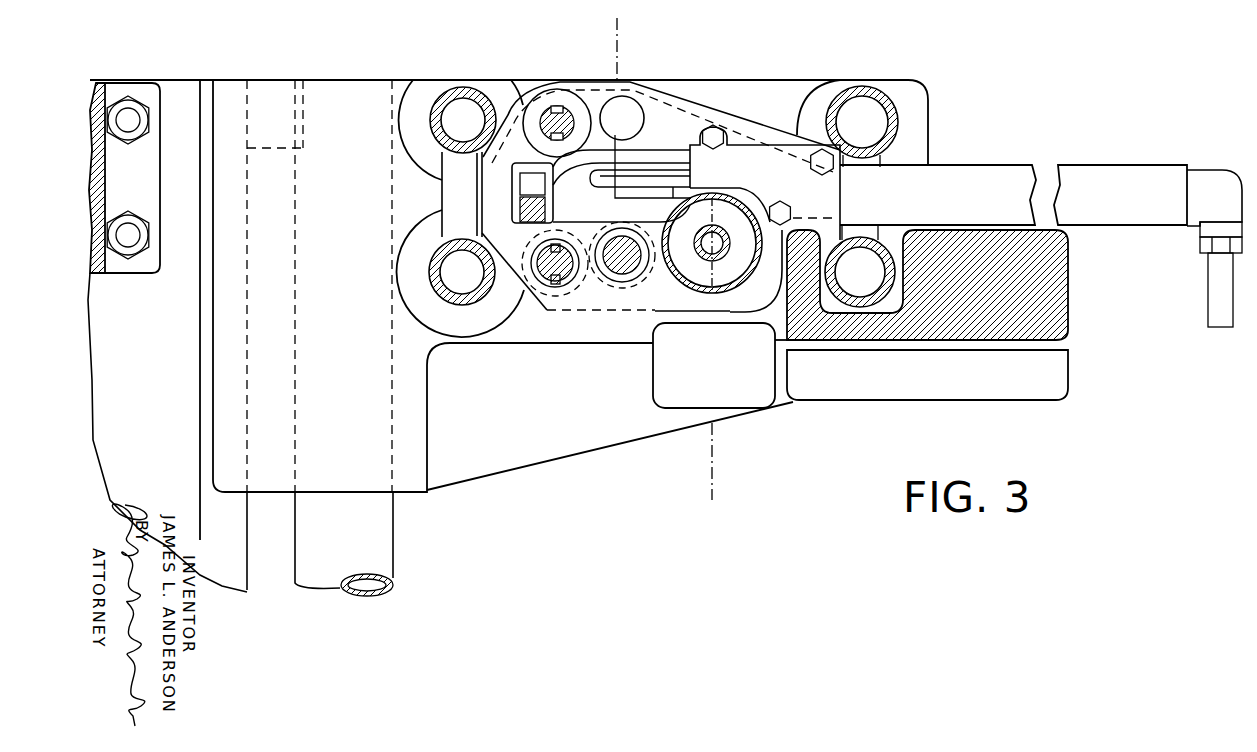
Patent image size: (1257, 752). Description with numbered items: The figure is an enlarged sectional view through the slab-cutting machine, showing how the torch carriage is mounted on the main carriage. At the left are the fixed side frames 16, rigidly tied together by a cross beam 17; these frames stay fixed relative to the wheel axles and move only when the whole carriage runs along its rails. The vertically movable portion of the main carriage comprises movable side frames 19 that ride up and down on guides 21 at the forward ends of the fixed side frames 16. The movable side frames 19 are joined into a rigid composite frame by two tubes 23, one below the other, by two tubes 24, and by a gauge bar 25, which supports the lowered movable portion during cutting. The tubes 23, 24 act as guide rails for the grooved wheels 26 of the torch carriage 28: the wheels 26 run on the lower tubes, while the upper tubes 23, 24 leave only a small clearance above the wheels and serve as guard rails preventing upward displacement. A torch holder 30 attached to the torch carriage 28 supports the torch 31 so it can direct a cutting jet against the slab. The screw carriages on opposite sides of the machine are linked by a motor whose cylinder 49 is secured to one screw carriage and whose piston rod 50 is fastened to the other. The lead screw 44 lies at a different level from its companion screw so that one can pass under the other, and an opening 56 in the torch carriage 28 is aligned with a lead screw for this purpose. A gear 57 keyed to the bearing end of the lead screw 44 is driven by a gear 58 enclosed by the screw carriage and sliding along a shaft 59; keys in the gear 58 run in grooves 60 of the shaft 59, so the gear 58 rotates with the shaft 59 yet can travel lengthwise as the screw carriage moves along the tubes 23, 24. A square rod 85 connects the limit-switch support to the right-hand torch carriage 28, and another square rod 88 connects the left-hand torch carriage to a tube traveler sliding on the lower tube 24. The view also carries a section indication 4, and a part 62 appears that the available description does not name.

The fixed side frames 16 is at (172, 97).
The cross beam 17 is at (102, 84).
The movable side frames 19 is at (424, 492).
The guides 21 is at (377, 543).
The tubes 23 is at (896, 272).
The tubes 24 is at (456, 298).
The gauge bar 25 is at (1058, 314).
The grooved wheels 26 is at (882, 160).
The torch carriage 28 is at (683, 98).
The torch holder 30 is at (752, 158).
The torch 31 is at (1137, 178).
The lead screw 44 is at (631, 263).
The cylinder 49 is at (731, 237).
The piston rod 50 is at (777, 205).
The opening 56 is at (625, 97).
The gear 57 is at (604, 272).
The gear 58 is at (563, 306).
The shaft 59 is at (539, 270).
The grooves 60 is at (552, 285).
The drive shaft 62 is at (559, 100).
The square rod 85 is at (524, 183).
The square rod 88 is at (548, 215).
The section line 4 is at (679, 493).